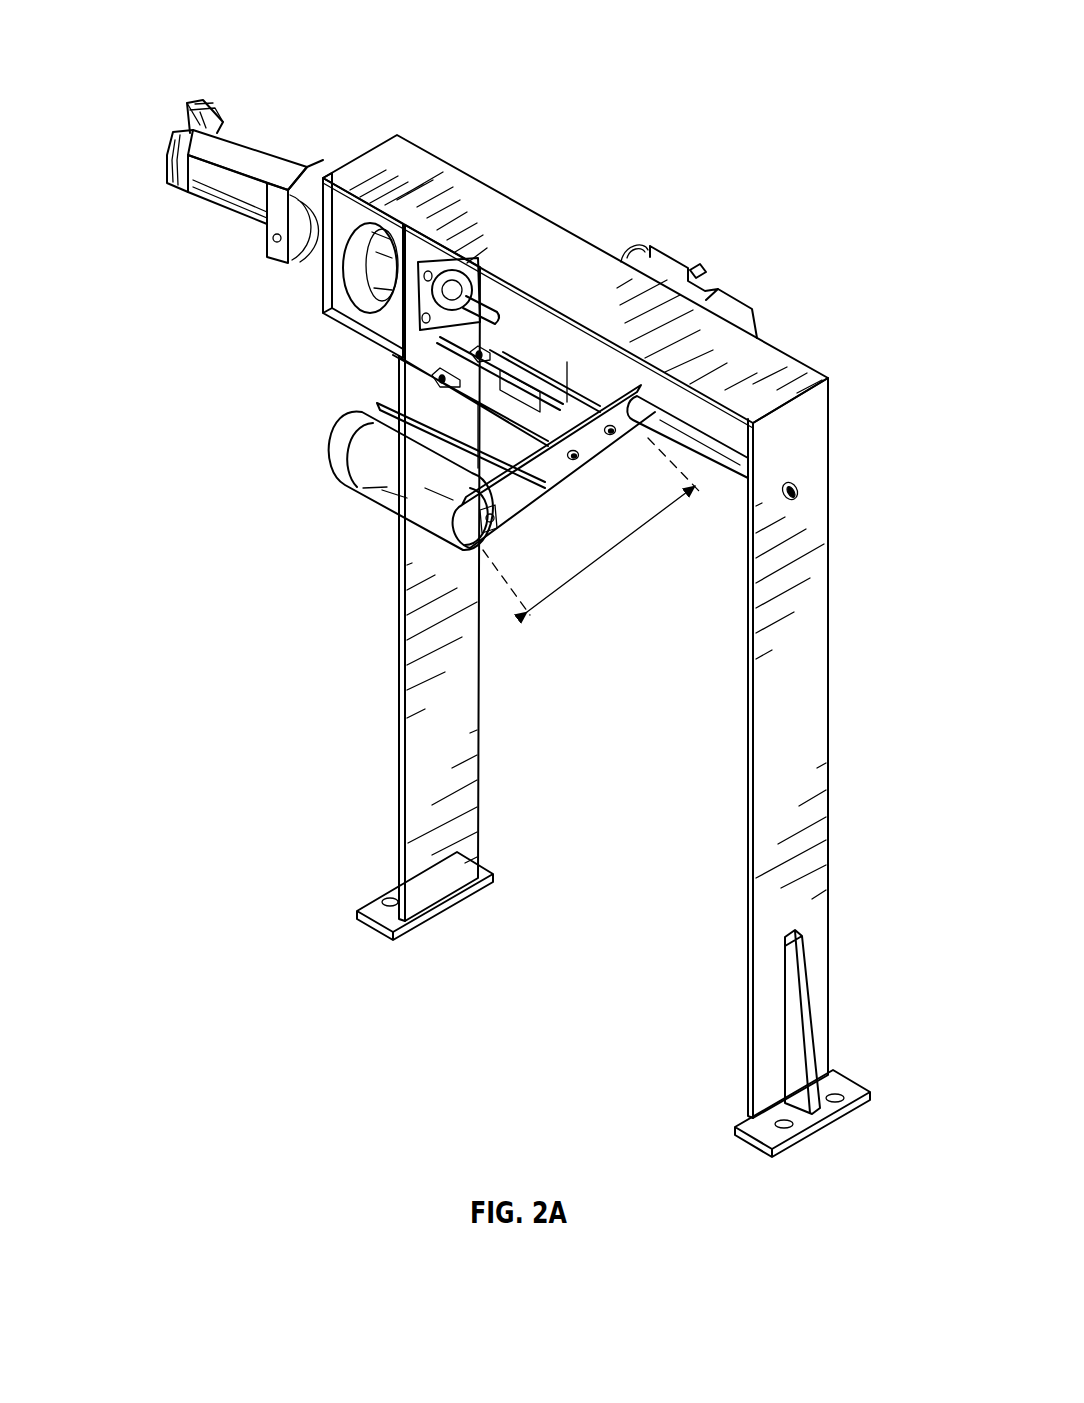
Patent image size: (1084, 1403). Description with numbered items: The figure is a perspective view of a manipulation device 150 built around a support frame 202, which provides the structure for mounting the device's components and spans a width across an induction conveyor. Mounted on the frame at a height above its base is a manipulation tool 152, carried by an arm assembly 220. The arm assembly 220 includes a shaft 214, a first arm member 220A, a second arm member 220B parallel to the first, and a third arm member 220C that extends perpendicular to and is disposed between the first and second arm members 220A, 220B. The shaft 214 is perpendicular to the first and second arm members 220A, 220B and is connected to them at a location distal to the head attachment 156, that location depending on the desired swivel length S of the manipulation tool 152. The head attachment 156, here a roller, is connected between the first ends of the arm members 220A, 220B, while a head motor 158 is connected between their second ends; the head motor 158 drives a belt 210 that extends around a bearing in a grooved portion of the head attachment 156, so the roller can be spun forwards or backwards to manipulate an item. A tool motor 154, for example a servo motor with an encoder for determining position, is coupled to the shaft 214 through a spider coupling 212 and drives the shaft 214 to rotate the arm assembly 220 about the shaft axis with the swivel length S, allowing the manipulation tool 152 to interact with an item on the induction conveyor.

The manipulation device 150 is at (178, 40).
The manipulation tool 152 is at (312, 463).
The tool motor 154 is at (232, 190).
The head attachment 156 is at (408, 497).
The head motor 158 is at (745, 304).
The support frame 202 is at (818, 683).
The belt 210 is at (390, 407).
The spider coupling 212 is at (383, 227).
The shaft 214 is at (733, 462).
The arm assembly 220 is at (563, 488).
The first arm member 220A is at (612, 440).
The second arm member 220B is at (400, 365).
The third arm member 220C is at (520, 397).
The swivel length S is at (612, 548).